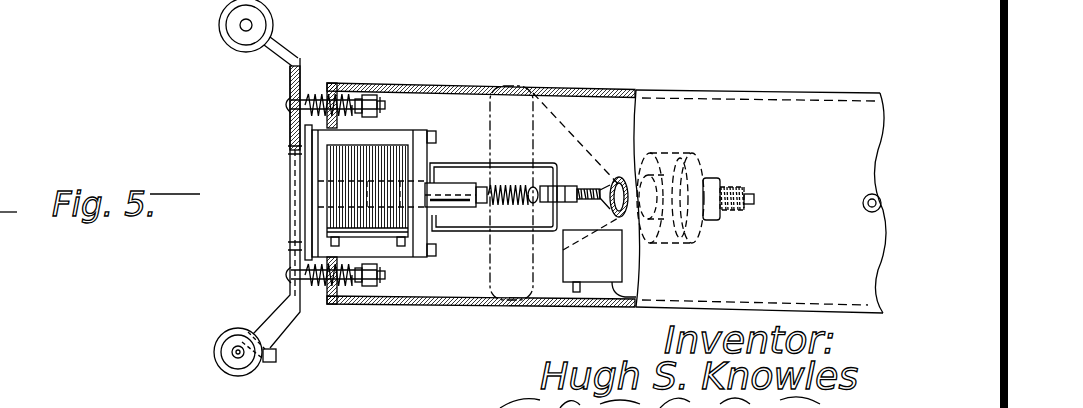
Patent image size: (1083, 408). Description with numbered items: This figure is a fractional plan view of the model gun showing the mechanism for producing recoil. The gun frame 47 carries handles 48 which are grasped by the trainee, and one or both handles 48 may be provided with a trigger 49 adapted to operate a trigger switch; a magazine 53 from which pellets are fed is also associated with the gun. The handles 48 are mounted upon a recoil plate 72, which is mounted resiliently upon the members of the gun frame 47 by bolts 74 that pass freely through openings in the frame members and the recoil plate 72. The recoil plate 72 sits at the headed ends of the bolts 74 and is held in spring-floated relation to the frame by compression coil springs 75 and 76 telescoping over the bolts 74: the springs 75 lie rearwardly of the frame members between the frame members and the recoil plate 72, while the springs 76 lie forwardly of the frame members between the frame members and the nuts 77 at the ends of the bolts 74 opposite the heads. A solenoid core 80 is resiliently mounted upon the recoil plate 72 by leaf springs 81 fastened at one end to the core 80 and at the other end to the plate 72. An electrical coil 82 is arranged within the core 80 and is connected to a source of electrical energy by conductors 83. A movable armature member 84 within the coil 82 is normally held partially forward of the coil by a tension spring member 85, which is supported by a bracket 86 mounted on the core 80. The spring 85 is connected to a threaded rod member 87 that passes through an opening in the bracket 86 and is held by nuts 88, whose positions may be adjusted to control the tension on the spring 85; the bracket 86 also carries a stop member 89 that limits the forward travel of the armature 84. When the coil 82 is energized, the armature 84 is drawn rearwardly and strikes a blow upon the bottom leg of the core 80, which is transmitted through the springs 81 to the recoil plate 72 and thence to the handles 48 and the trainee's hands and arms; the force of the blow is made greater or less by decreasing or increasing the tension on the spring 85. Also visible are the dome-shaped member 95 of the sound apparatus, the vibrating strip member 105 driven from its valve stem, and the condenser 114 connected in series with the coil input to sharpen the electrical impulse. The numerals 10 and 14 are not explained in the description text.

The panel 10 is at (684, 86).
The contact 14 is at (572, 252).
The gun frame 47 is at (424, 83).
The handles 48 is at (242, 52).
The trigger 49 is at (277, 357).
The magazine 53 is at (867, 194).
The recoil plate 72 is at (295, 203).
The bolts 74 is at (386, 104).
The compression coil springs 75 is at (313, 96).
The compression coil springs 76 is at (348, 94).
The nuts 77 is at (371, 116).
The solenoid core 80 is at (426, 263).
The leaf springs 81 is at (290, 150).
The electrical coil 82 is at (340, 163).
The conductors 83 is at (332, 248).
The armature member 84 is at (427, 245).
The tension spring member 85 is at (490, 184).
The bracket 86 is at (557, 170).
The threaded rod member 87 is at (628, 166).
The nuts 88 is at (577, 172).
The stop member 89 is at (440, 201).
The dome-shaped member 95 is at (696, 171).
The vibrating strip member 105 is at (738, 180).
The condenser 114 is at (605, 263).